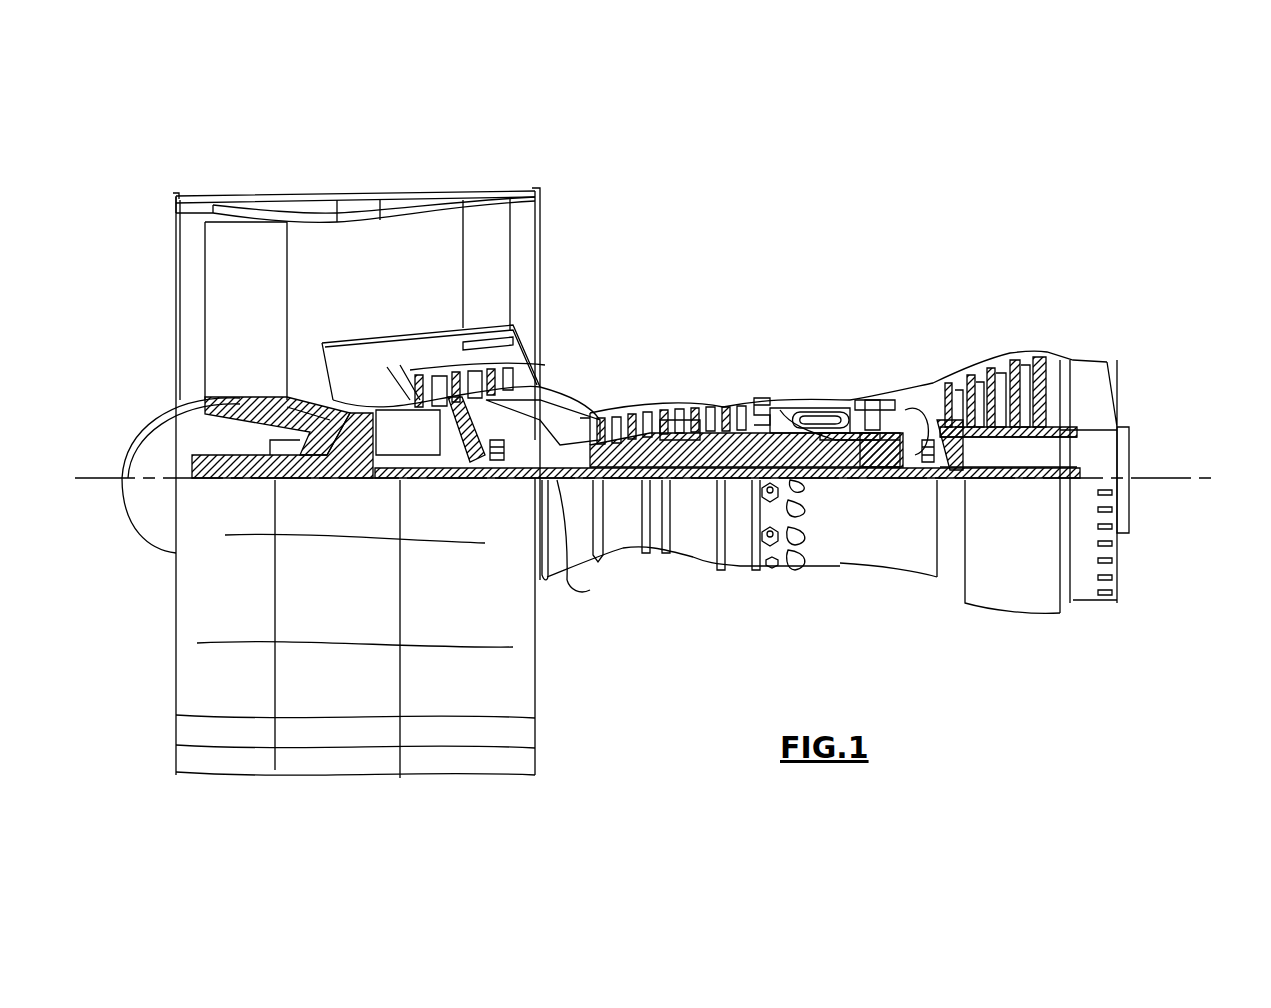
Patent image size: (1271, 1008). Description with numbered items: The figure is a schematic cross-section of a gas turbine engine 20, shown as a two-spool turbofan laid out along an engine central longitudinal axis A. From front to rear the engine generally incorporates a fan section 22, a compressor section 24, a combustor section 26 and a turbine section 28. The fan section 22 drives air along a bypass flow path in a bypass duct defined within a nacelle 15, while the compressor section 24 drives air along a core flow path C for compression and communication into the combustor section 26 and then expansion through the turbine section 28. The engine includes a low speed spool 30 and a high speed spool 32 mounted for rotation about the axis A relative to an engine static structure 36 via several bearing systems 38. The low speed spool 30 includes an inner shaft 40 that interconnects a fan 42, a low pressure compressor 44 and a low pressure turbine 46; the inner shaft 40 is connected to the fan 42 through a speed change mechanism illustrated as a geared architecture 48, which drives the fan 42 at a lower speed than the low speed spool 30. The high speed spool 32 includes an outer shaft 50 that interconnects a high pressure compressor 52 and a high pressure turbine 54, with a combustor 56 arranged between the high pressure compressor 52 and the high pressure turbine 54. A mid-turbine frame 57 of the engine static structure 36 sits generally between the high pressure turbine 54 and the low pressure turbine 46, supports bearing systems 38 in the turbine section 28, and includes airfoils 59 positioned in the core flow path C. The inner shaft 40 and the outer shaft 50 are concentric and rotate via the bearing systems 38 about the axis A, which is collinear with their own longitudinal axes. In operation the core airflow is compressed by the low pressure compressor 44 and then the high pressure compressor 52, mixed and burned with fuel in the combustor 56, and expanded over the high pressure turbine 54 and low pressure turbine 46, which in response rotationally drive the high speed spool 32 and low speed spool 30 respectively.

The nacelle 15 is at (355, 205).
The gas turbine engine 20 is at (818, 247).
The fan section 22 is at (287, 188).
The compressor section 24 is at (588, 390).
The combustor section 26 is at (810, 377).
The turbine section 28 is at (958, 346).
The low speed spool 30 is at (698, 480).
The high speed spool 32 is at (740, 444).
The engine static structure 36 is at (737, 570).
The bearing systems 38 is at (497, 462).
The inner shaft 40 is at (585, 592).
The fan 42 is at (322, 271).
The low pressure compressor 44 is at (462, 376).
The low pressure turbine 46 is at (1005, 360).
The geared architecture 48 is at (365, 458).
The outer shaft 50 is at (830, 470).
The high pressure compressor 52 is at (668, 432).
The high pressure turbine 54 is at (876, 408).
The combustor 56 is at (812, 418).
The mid-turbine frame 57 is at (920, 385).
The airfoils 59 is at (955, 442).
The engine central longitudinal axis A is at (1210, 478).
The core flow path C is at (368, 376).